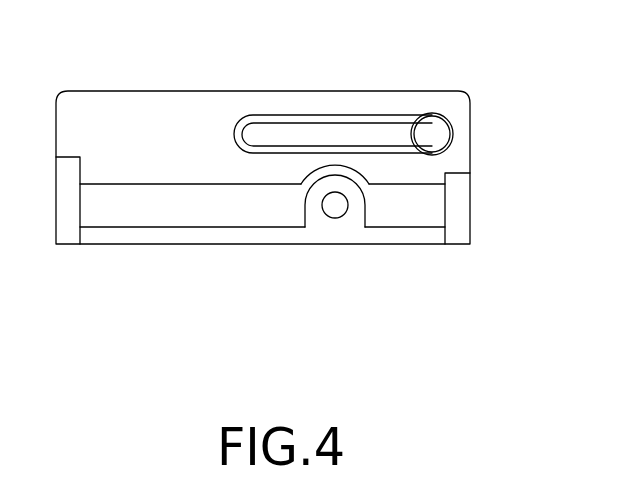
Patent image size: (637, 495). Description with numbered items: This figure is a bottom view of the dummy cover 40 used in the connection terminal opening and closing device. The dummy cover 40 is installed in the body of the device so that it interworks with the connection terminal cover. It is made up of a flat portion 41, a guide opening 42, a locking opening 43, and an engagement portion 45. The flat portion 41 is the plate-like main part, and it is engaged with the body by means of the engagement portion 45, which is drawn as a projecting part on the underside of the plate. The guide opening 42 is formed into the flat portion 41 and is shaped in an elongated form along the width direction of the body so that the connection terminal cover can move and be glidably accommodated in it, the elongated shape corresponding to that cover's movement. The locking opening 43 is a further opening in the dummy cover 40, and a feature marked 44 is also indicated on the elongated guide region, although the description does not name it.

The dummy cover 40 is at (544, 173).
The flat portion 41 is at (147, 112).
The guide opening 42 is at (175, 212).
The locking opening 43 is at (434, 127).
The elongated slot 44 is at (317, 132).
The engagement portion 45 is at (355, 210).